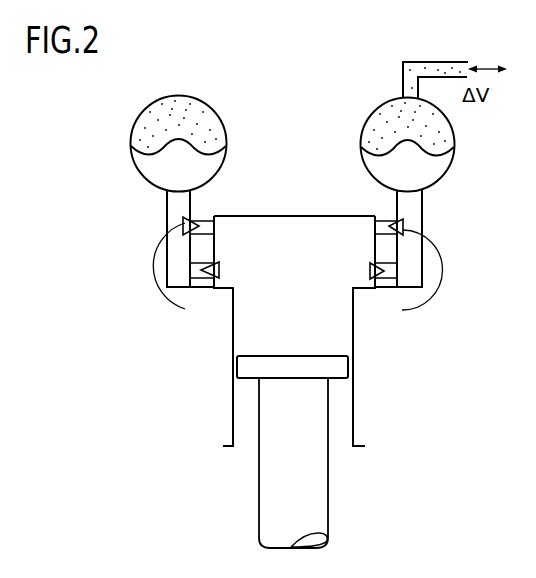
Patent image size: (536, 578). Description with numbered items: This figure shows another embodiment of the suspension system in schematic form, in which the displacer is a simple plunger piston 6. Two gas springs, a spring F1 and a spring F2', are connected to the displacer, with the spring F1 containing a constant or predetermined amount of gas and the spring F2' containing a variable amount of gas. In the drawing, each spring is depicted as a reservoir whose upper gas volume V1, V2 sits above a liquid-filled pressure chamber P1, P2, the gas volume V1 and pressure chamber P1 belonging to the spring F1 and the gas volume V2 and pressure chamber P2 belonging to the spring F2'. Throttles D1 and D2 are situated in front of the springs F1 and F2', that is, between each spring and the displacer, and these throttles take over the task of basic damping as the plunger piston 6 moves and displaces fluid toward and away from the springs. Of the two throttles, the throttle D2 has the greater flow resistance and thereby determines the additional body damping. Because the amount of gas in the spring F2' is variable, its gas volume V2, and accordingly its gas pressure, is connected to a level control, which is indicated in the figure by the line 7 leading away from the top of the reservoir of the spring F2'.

The gas volume of first reservoir V1 is at (208, 105).
The gas volume of second reservoir V2 is at (385, 110).
The first pressure chamber P1 is at (215, 172).
The second pressure chamber P2 is at (382, 170).
The spring F1 is at (230, 122).
The spring F2' is at (380, 214).
The throttle D1 is at (193, 268).
The throttle D2 is at (389, 270).
The plunger piston 6 is at (254, 476).
The line 7 is at (447, 63).